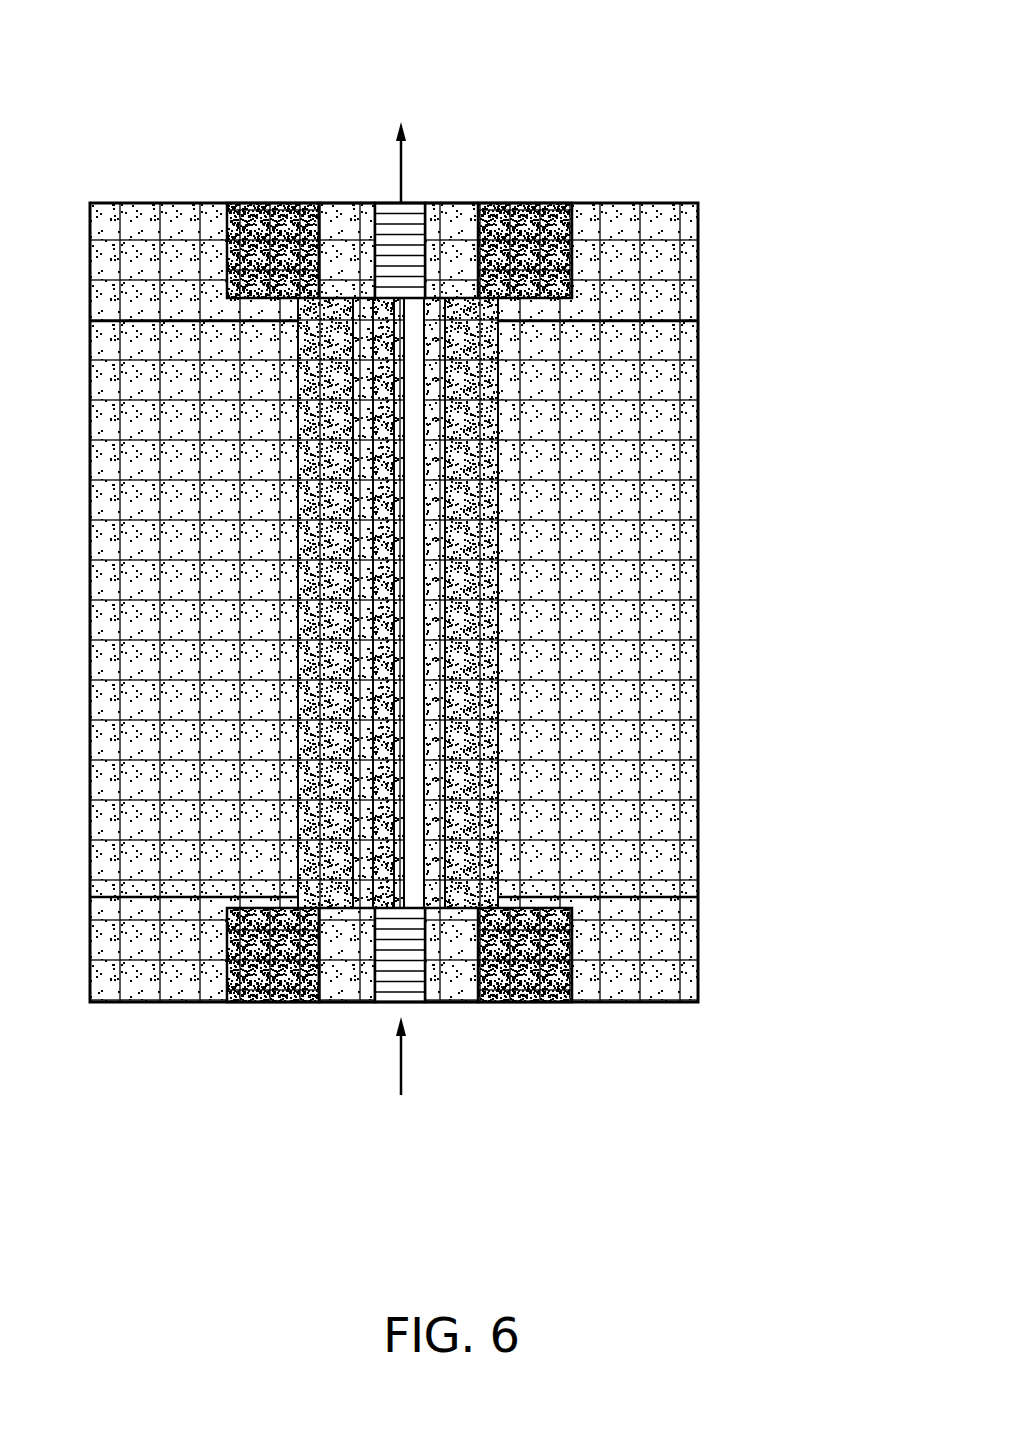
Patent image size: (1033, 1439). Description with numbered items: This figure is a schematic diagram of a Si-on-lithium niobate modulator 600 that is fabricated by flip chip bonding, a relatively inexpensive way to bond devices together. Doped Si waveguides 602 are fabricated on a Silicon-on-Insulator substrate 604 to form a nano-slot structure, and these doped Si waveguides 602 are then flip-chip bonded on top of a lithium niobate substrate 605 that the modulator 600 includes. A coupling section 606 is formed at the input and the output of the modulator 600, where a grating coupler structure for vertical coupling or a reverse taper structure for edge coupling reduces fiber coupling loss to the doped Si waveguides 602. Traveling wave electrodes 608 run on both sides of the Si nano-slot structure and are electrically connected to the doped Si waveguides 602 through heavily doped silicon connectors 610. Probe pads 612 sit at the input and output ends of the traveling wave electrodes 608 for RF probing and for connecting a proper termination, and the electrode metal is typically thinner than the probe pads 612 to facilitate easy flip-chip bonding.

The Si-on-lithium niobate modulator 600 is at (436, 556).
The doped Si waveguides 602 is at (385, 402).
The Silicon-on-Insulator substrate 604 is at (142, 276).
The lithium niobate substrate 605 is at (577, 622).
The coupling section 606 is at (389, 212).
The traveling wave electrodes 608 is at (325, 830).
The heavily doped silicon connectors 610 is at (367, 500).
The probe pads 612 is at (274, 215).